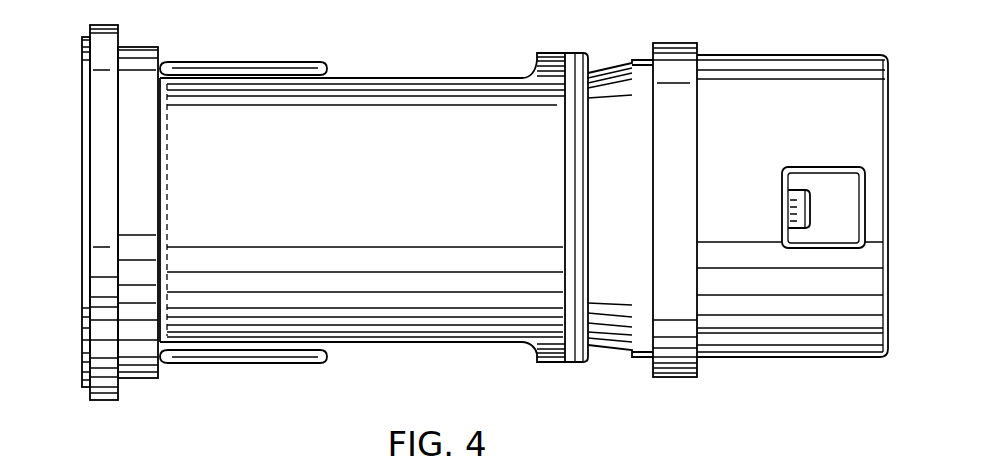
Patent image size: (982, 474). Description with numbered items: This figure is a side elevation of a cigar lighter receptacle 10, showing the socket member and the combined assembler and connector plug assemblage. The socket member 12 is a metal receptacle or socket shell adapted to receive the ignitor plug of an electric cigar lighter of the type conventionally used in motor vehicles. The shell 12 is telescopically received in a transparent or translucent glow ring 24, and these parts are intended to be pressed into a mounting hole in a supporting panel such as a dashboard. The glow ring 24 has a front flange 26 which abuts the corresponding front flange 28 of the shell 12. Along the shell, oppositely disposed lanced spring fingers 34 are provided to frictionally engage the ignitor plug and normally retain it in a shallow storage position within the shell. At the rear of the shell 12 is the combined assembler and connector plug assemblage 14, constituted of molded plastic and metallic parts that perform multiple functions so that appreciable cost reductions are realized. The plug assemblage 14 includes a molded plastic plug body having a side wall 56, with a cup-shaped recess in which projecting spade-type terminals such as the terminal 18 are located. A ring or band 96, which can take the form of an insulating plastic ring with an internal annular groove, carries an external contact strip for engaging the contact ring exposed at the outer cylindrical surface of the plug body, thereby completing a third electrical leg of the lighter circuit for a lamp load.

The cigar lighter receptacle 10 is at (467, 71).
The socket member 12 is at (362, 103).
The combined assembler and connector plug assemblage 14 is at (778, 377).
The spade-type terminal 18 is at (808, 219).
The glow ring 24 is at (138, 57).
The front flange of glow ring 26 is at (107, 400).
The front flange of shell 28 is at (84, 108).
The lanced spring fingers 34 is at (277, 62).
The side wall 56 is at (833, 70).
The band 96 is at (685, 65).